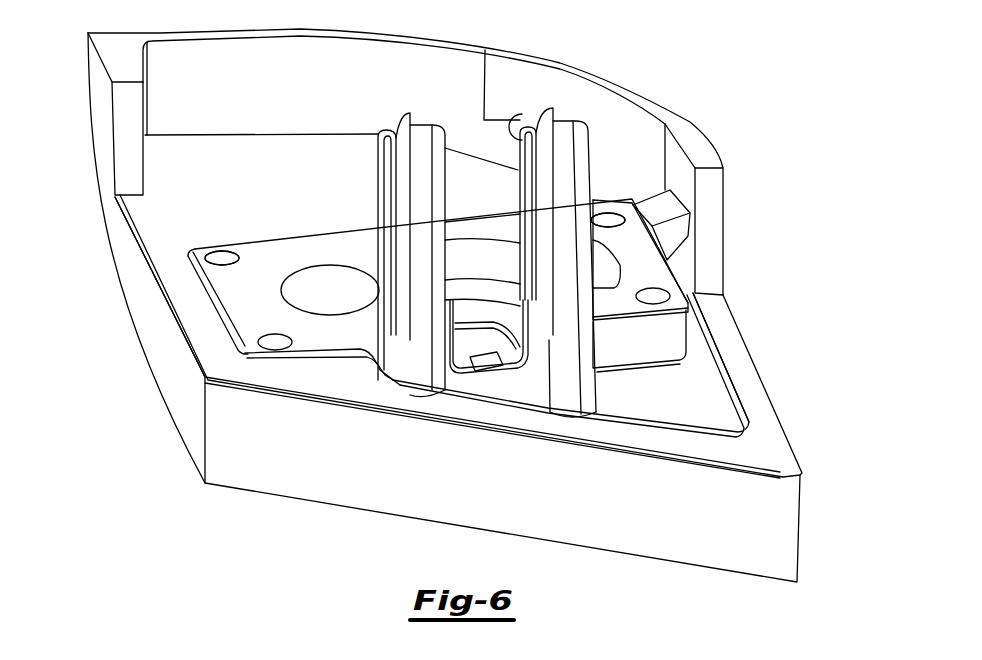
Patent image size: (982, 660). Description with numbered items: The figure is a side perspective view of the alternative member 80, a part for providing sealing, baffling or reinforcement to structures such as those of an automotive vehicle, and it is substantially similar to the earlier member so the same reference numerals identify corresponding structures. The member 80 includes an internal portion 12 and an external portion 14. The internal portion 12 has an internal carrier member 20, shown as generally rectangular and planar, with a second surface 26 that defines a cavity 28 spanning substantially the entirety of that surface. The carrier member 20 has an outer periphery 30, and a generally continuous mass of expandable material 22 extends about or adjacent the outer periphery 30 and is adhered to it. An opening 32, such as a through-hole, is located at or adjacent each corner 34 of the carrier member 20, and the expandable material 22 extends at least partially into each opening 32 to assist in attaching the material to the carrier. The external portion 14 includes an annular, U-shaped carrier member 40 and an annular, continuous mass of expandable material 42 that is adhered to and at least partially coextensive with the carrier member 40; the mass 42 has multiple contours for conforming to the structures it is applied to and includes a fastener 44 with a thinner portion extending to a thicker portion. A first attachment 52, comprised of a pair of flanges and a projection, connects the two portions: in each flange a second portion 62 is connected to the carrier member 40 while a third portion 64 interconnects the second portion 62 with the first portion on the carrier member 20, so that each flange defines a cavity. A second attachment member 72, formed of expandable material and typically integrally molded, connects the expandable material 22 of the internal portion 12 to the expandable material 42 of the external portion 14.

The internal portion 12 is at (657, 374).
The external portion 14 is at (789, 423).
The internal carrier member 20 is at (273, 272).
The expandable material 22 is at (675, 335).
The second surface 26 is at (260, 317).
The cavity 28 is at (478, 268).
The outer periphery 30 is at (645, 255).
The opening 32 is at (222, 250).
The corner 34 is at (201, 253).
The carrier member 40 is at (212, 366).
The expandable material 42 is at (267, 101).
The fastener 44 is at (515, 99).
The first attachment 52 is at (360, 178).
The second portion 62 is at (560, 413).
The third portion 64 is at (433, 132).
The second attachment member 72 is at (672, 204).
The alternative member 80 is at (805, 334).